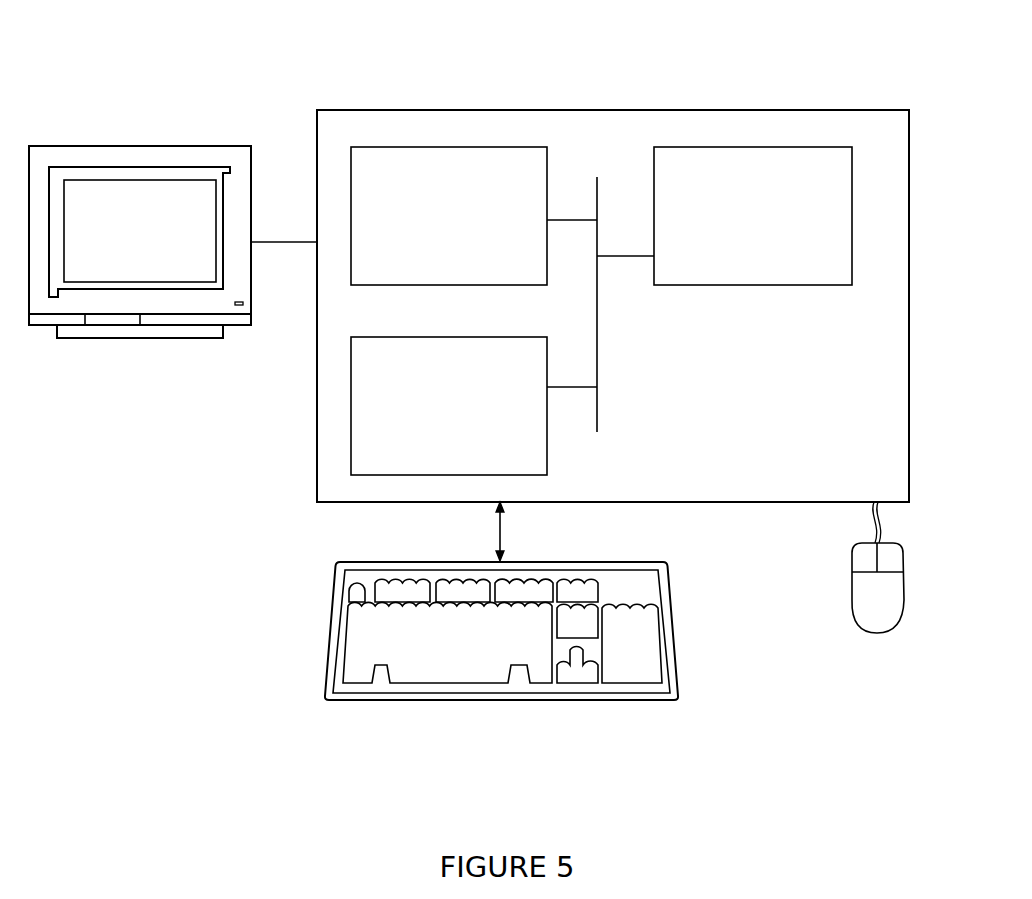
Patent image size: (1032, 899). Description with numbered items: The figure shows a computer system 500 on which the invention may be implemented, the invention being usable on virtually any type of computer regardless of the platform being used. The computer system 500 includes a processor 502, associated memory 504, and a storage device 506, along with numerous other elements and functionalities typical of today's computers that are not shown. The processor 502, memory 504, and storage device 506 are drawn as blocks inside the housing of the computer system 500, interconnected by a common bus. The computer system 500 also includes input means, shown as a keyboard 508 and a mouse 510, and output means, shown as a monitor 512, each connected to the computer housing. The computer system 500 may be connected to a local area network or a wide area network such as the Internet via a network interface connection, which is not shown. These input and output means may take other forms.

The computer system 500 is at (650, 63).
The processor 502 is at (723, 226).
The memory 504 is at (430, 226).
The storage device 506 is at (427, 416).
The keyboard 508 is at (426, 652).
The mouse 510 is at (858, 606).
The monitor 512 is at (118, 246).